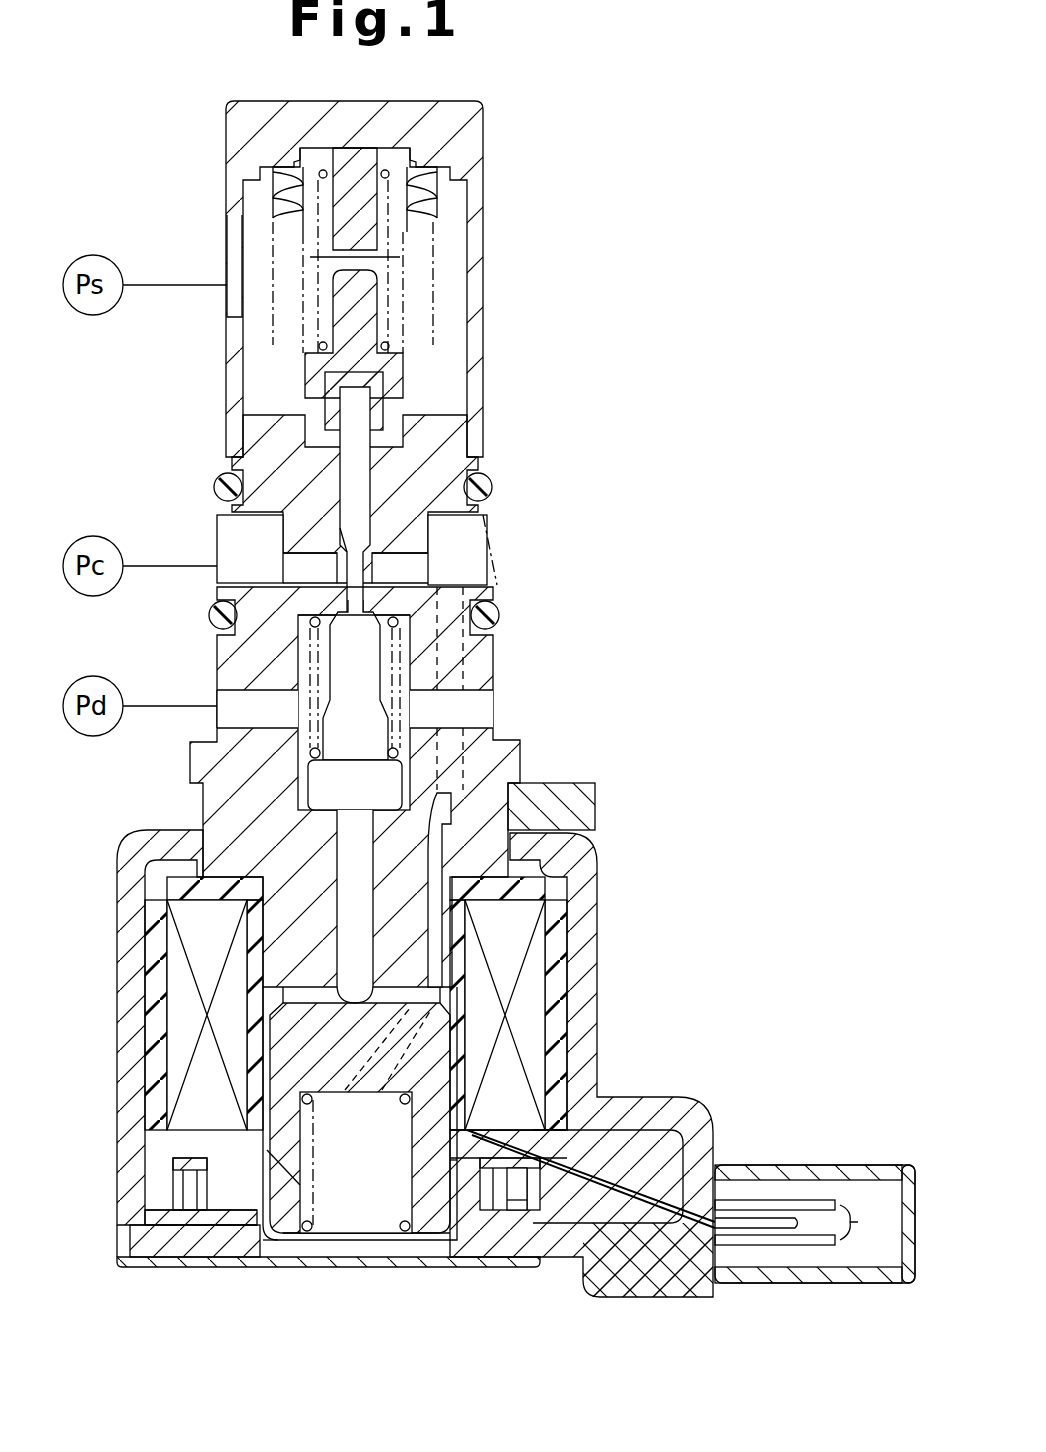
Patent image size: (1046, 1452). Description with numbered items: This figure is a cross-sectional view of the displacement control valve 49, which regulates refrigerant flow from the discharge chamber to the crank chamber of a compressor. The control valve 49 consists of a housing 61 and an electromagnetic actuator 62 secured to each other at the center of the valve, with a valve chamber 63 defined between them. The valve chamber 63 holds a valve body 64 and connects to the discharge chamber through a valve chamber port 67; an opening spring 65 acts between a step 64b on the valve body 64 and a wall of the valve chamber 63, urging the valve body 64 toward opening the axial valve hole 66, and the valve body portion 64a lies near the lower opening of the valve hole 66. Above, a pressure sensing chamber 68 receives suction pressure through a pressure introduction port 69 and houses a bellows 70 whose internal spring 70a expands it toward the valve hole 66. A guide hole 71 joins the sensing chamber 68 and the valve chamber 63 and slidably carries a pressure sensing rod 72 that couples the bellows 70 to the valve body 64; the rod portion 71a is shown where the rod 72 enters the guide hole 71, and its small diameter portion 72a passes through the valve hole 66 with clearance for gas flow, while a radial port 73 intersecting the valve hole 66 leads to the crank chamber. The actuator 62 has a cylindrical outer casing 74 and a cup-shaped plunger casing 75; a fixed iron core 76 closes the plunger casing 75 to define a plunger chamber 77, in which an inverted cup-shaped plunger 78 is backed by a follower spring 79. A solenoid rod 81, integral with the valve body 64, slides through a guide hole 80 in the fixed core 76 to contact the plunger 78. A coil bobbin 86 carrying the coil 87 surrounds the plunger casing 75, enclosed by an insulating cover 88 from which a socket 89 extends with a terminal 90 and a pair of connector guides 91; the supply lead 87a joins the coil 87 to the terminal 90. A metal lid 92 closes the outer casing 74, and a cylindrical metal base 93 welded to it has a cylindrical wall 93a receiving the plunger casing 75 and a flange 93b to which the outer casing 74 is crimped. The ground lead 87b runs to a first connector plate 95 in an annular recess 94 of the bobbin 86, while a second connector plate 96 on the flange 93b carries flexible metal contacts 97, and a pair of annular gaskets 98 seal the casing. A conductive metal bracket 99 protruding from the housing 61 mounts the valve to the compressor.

The displacement control valve 49 is at (640, 200).
The housing 61 is at (467, 441).
The electromagnetic actuator 62 is at (590, 908).
The valve chamber 63 is at (298, 672).
The valve body 64 is at (335, 735).
The spool seal 64a is at (328, 616).
The step 64b is at (325, 760).
The opening spring 65 is at (310, 626).
The valve hole 66 is at (372, 580).
The valve chamber port 67 is at (230, 712).
The pressure sensing chamber 68 is at (462, 371).
The pressure introduction port 69 is at (242, 316).
The bellows 70 is at (440, 321).
The spring 70a is at (430, 184).
The guide hole 71 is at (345, 452).
The rod shoulder 71a is at (340, 545).
The pressure sensing rod 72 is at (368, 482).
The small diameter portion 72a is at (355, 578).
The port 73 is at (286, 556).
The outer casing 74 is at (597, 952).
The plunger casing 75 is at (452, 1243).
The fixed iron core 76 is at (275, 930).
The plunger chamber 77 is at (348, 1236).
The plunger 78 is at (290, 1243).
The follower spring 79 is at (400, 1240).
The guide hole 80 is at (365, 868).
The solenoid rod 81 is at (360, 943).
The coil bobbin 86 is at (310, 1120).
The coil 87 is at (520, 1000).
The supply lead 87a is at (635, 1125).
The ground lead 87b is at (495, 1140).
The insulating cover 88 is at (567, 1040).
The socket 89 is at (798, 1165).
The terminal 90 is at (775, 1232).
The connector guides 91 is at (804, 1222).
The metal lid 92 is at (255, 1267).
The cylindrical metal base 93 is at (200, 1257).
The cylindrical wall 93a is at (250, 1178).
The flange 93b is at (135, 1262).
The annular recess 94 is at (205, 1160).
The first connector plate 95 is at (445, 1167).
The second connector plate 96 is at (507, 1215).
The flexible metal contacts 97 is at (527, 1215).
The annular gaskets 98 is at (190, 1190).
The bracket 99 is at (565, 783).